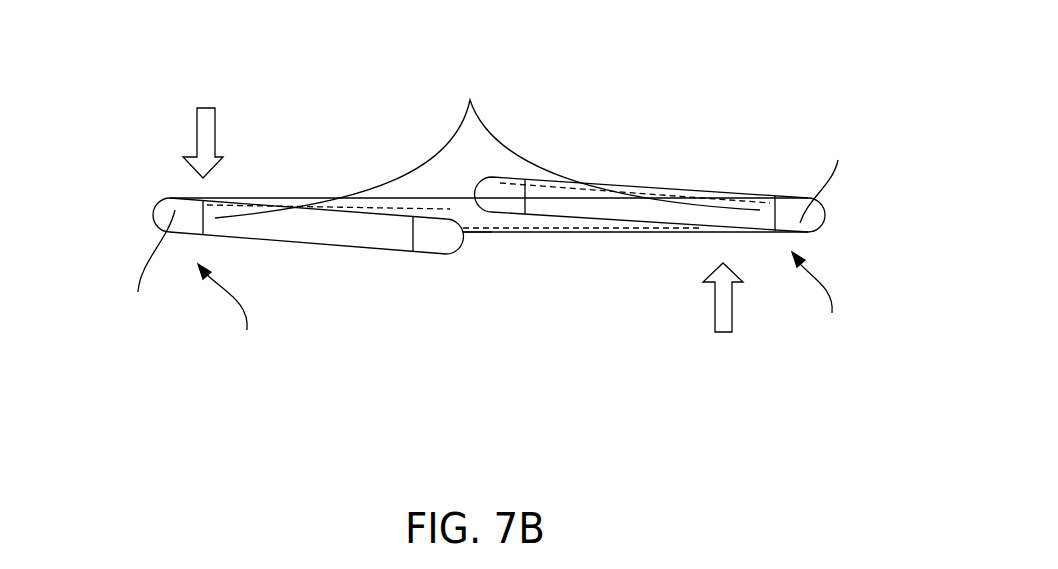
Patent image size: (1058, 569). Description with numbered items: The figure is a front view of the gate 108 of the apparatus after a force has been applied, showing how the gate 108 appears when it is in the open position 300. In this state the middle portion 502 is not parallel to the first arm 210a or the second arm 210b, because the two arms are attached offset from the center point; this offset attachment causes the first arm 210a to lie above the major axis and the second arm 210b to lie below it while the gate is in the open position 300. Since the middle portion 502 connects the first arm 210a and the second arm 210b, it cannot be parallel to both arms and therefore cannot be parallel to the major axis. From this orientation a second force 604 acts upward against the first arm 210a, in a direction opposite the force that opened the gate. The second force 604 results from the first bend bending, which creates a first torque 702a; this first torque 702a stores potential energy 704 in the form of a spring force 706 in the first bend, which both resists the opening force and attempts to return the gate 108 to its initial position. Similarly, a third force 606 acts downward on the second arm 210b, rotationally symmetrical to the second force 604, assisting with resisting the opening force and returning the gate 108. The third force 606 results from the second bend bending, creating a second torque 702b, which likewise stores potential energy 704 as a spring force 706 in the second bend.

The gate 108 is at (167, 183).
The first arm 210a is at (707, 203).
The second arm 210b is at (381, 241).
The middle portion 502 is at (520, 222).
The potential energy 704 is at (487, 110).
The third force 606 is at (280, 76).
The second force 604 is at (743, 369).
The first torque 702a is at (838, 140).
The second torque 702b is at (137, 300).
The spring force 706 is at (534, 340).
The open position 300 is at (495, 417).